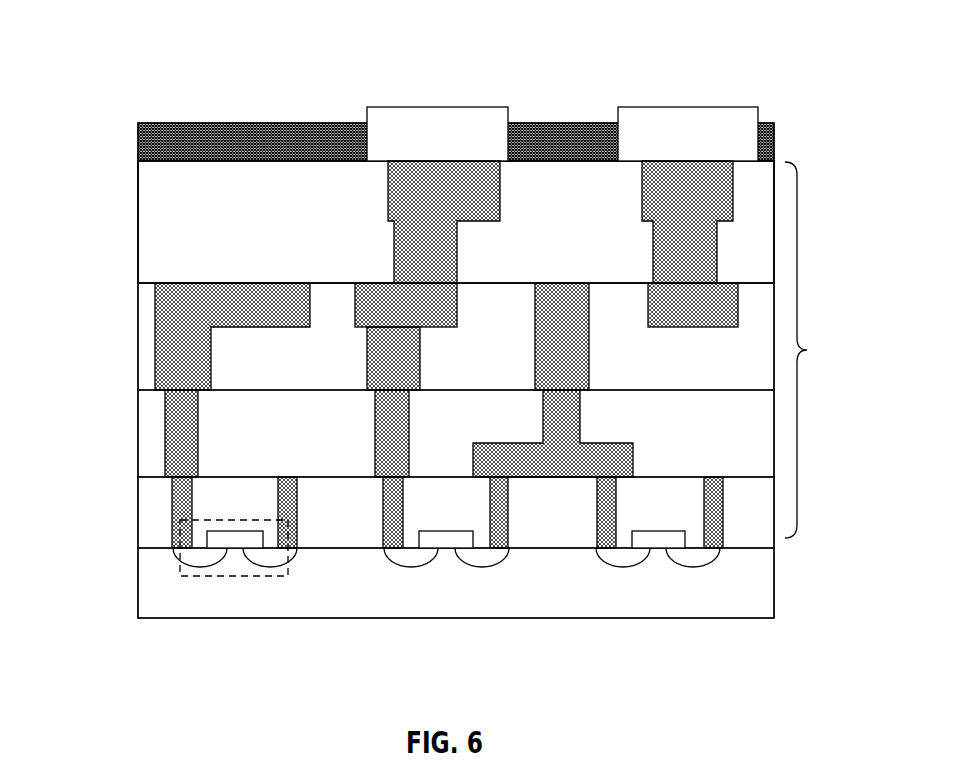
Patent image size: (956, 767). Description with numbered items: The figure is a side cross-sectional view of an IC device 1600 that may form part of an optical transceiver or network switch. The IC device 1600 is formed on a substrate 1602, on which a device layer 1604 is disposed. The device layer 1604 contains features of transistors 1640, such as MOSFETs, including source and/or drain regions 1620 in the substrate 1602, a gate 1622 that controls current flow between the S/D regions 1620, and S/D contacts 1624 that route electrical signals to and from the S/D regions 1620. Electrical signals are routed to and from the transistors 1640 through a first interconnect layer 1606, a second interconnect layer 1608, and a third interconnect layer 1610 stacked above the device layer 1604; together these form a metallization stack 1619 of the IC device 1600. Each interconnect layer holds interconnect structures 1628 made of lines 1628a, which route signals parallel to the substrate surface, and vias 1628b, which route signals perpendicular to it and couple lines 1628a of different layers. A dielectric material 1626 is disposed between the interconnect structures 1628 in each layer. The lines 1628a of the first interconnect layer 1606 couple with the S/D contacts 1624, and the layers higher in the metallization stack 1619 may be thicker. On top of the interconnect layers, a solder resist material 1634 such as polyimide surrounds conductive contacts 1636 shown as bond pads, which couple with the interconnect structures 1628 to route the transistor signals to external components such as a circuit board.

The IC device 1600 is at (146, 61).
The substrate 1602 is at (766, 607).
The device layer 1604 is at (138, 520).
The first interconnect layer 1606 is at (138, 435).
The second interconnect layer 1608 is at (138, 335).
The third interconnect layer 1610 is at (138, 220).
The metallization stack 1619 is at (625, 349).
The source and/or drain regions 1620 is at (620, 568).
The gate 1622 is at (423, 530).
The S/D contacts 1624 is at (153, 532).
The dielectric material 1626 is at (188, 273).
The interconnect structures 1628 is at (145, 363).
The lines 1628a is at (445, 330).
The vias 1628b is at (367, 370).
The solder resist material 1634 is at (252, 123).
The conductive contacts 1636 is at (458, 143).
The transistors 1640 is at (255, 577).